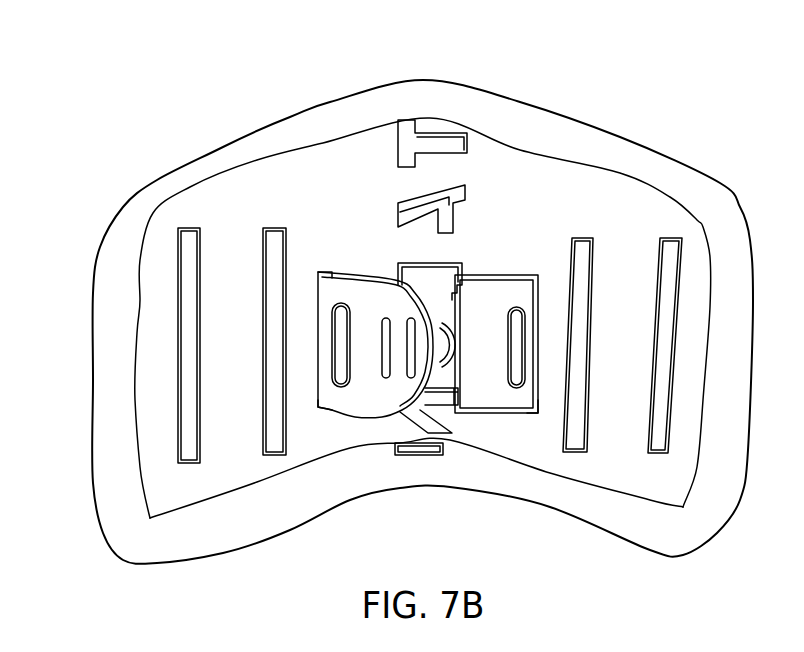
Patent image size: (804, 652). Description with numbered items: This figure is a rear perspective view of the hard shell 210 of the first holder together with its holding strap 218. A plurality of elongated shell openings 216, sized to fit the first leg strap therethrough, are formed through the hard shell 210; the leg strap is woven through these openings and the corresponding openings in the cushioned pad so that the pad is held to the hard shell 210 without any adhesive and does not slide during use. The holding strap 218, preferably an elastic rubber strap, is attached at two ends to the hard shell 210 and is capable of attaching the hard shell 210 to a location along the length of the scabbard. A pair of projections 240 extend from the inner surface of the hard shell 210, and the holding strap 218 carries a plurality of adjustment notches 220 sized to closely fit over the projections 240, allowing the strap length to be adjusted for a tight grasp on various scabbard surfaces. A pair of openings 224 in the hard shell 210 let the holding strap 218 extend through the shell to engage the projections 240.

The hard shell 210 is at (108, 80).
The elongated shell openings 216 is at (273, 445).
The holding strap 218 is at (482, 297).
The adjustment notches 220 is at (340, 308).
The openings 224 is at (325, 410).
The projections 240 is at (518, 367).